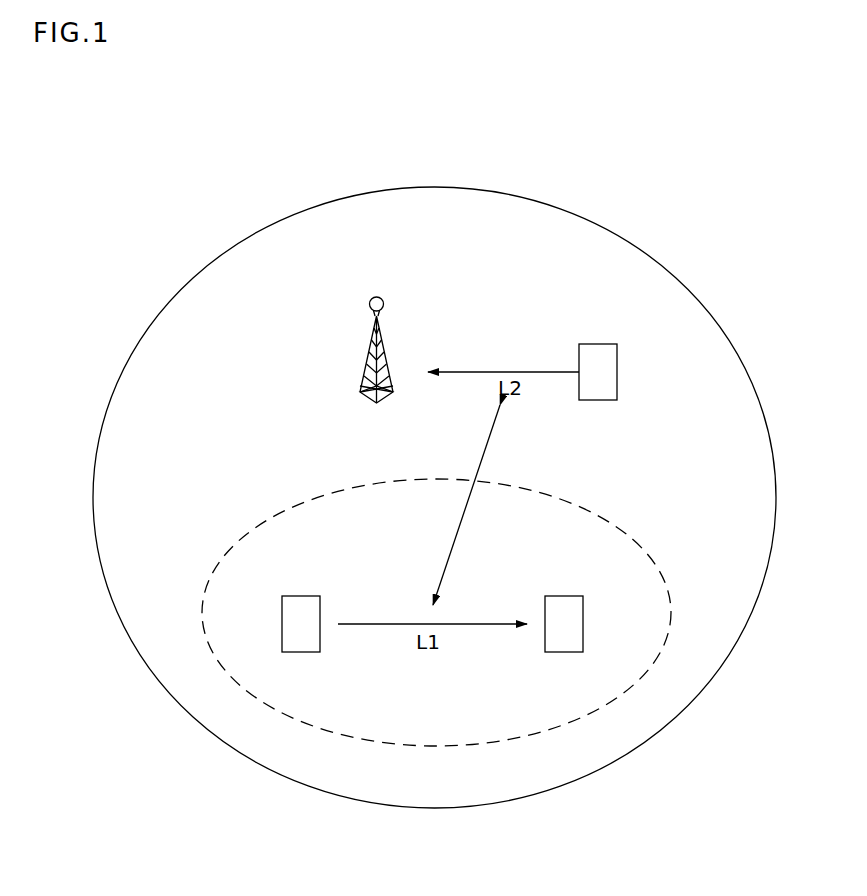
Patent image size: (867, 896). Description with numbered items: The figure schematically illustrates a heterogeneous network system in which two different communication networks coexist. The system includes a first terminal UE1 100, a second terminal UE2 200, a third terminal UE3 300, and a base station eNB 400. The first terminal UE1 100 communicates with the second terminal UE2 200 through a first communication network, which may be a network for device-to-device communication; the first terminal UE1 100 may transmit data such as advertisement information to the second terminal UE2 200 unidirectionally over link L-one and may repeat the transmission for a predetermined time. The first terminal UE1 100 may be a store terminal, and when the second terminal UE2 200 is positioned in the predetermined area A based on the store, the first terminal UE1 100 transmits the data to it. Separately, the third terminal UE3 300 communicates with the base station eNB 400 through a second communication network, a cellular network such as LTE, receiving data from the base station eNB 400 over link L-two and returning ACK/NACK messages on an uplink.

The first terminal (UE1) 100 is at (300, 596).
The second terminal (UE2) 200 is at (562, 596).
The third terminal (UE3) 300 is at (597, 344).
The base station (eNB) 400 is at (376, 297).
The predetermined area A is at (287, 509).